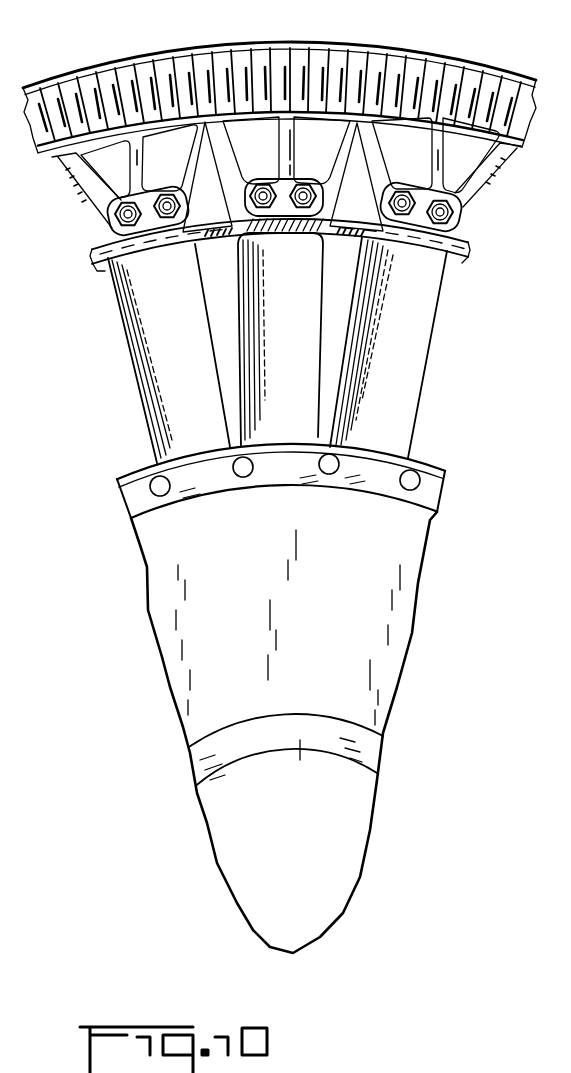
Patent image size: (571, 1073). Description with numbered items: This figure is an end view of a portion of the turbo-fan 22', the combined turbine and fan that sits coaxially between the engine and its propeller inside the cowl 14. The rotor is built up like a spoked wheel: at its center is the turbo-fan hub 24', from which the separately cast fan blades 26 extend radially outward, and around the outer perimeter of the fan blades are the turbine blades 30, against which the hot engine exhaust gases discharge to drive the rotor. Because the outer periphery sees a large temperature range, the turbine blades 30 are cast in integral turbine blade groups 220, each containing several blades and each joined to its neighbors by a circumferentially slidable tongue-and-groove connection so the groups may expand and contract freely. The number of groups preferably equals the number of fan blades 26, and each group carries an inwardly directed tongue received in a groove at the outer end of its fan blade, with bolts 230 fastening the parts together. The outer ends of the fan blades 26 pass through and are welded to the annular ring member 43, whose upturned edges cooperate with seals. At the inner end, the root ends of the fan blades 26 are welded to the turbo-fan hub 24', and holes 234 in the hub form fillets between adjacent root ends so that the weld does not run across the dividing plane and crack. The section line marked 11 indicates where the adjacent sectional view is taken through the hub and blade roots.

The section line 11 is at (247, 22).
The turbine blade group 220 is at (478, 64).
The turbine blade 30 is at (513, 111).
The turbo-fan 22' is at (286, 255).
The bolt 230 is at (447, 214).
The annular ring member 43 is at (97, 266).
The fan blade 26 is at (160, 394).
The cowl 14 is at (152, 328).
The hole 234 is at (152, 488).
The turbo-fan hub 24' is at (272, 732).